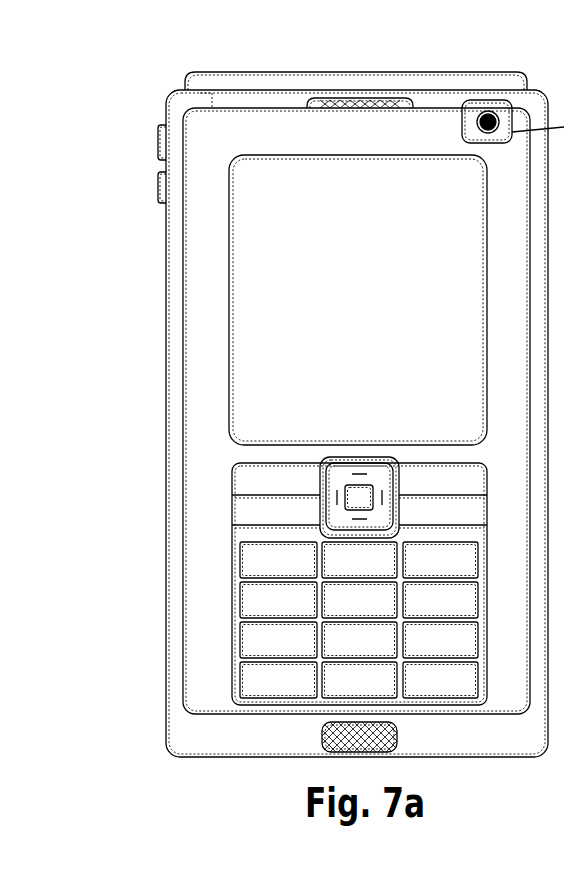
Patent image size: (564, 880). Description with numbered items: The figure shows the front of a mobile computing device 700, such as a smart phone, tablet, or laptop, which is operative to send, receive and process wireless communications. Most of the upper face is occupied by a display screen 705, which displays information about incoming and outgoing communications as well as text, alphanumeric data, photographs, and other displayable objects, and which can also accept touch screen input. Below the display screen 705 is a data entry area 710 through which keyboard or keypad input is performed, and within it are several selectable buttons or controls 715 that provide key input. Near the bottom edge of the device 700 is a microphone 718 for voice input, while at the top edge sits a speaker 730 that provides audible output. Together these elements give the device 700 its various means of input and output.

The mobile computing device 700 is at (160, 92).
The display screen 705 is at (263, 285).
The data entry area 710 is at (232, 504).
The selectable buttons or controls 715 is at (252, 597).
The microphone 718 is at (323, 728).
The speaker 730 is at (400, 100).